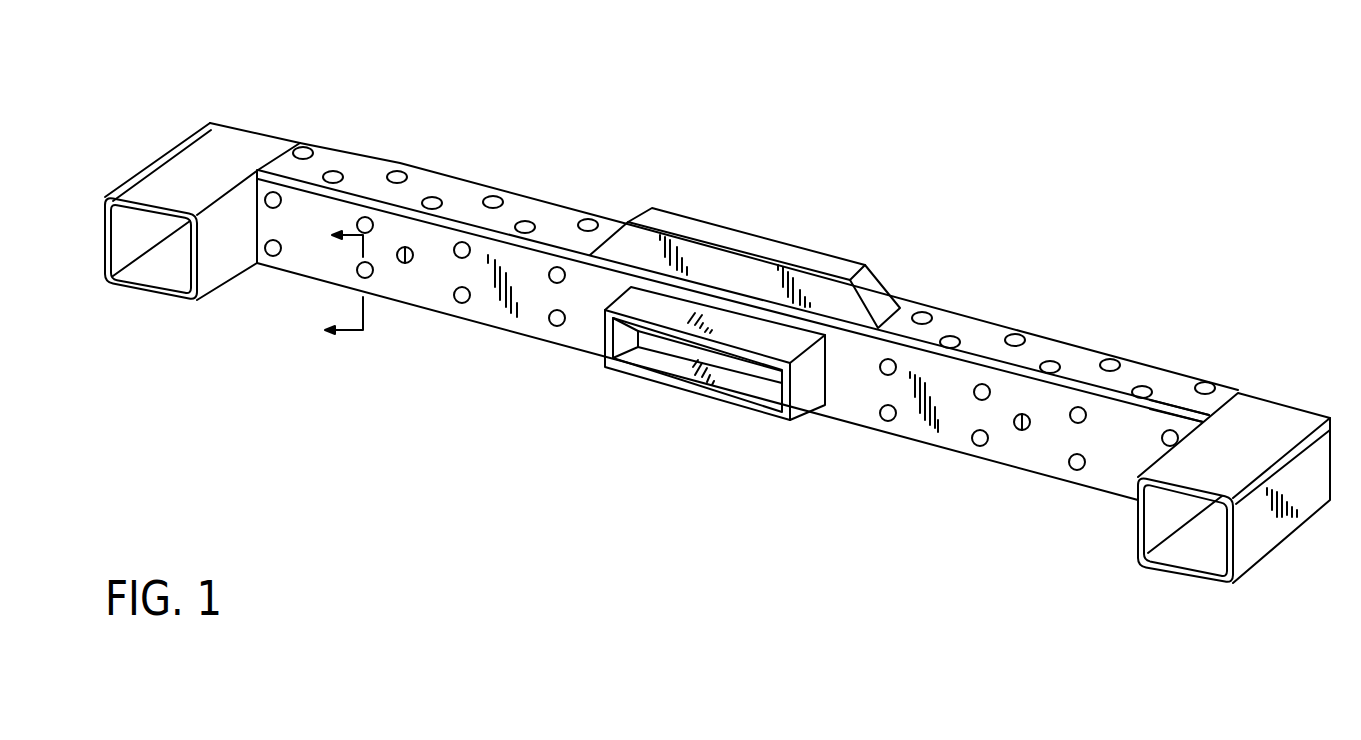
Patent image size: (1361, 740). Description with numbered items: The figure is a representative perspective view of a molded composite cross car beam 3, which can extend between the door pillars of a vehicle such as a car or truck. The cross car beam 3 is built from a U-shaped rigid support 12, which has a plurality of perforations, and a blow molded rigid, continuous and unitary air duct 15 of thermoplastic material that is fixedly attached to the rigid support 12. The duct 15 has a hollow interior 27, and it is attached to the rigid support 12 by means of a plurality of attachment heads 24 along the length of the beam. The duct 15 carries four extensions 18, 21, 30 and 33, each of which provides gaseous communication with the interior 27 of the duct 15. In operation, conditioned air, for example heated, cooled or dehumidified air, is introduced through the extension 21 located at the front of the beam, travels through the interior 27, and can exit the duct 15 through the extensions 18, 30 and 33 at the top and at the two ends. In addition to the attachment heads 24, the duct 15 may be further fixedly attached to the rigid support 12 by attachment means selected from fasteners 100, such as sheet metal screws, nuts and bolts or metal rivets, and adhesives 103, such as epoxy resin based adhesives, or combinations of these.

The molded composite cross car beam 3 is at (482, 463).
The rigid support 12 is at (1003, 328).
The air duct 15 is at (235, 148).
The extension 18 is at (885, 284).
The extension 21 is at (807, 398).
The attachment heads 24 is at (403, 172).
The hollow interior 27 is at (1212, 560).
The extension 30 is at (1196, 586).
The extension 33 is at (156, 298).
The fasteners 100 is at (405, 264).
The adhesives 103 is at (1213, 416).